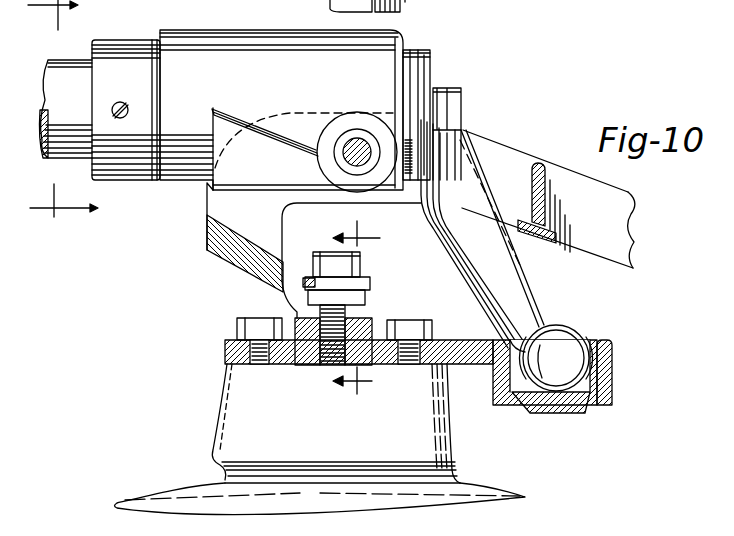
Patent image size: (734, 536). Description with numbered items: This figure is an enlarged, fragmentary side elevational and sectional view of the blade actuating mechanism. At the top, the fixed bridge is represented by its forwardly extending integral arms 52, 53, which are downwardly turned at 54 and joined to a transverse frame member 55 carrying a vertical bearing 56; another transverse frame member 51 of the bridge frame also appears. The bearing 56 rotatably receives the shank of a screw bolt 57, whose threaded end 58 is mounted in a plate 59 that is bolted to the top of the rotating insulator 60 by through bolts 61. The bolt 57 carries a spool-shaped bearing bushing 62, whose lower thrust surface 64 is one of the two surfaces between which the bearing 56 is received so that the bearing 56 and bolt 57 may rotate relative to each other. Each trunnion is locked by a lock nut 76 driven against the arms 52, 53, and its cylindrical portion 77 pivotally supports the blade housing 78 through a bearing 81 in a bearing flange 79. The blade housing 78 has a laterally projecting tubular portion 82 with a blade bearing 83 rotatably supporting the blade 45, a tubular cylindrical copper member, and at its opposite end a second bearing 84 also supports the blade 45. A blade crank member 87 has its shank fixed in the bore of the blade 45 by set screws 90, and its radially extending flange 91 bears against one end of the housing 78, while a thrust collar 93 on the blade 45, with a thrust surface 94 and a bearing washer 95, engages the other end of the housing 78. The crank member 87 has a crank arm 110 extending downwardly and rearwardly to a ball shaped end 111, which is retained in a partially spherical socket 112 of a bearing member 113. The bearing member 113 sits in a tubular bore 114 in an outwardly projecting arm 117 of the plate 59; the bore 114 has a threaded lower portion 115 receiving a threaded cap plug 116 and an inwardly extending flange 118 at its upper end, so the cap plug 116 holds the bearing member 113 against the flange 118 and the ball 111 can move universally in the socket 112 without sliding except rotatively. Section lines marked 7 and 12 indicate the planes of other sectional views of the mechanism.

The section line 7- 7 is at (356, 313).
The section line 12- 12 is at (63, 118).
The blade 45 is at (75, 62).
The transverse frame member 51 is at (546, 193).
The forwardly extending integral arm 52 is at (548, 196).
The forwardly extending integral arm 53 is at (433, 3).
The downwardly turned portion 54 is at (211, 199).
The transverse frame member 55 is at (237, 262).
The vertical bearing 56 is at (368, 281).
The screw bolt 57 is at (361, 260).
The threaded end 58 is at (356, 302).
The plate 59 is at (298, 318).
The rotating insulator 60 is at (451, 436).
The through bolts 61 is at (408, 333).
The bearing bushing 62 is at (309, 277).
The lower thrust surface 64 is at (372, 310).
The lock nut 76 is at (392, 7).
The cylindrical portion 77 is at (342, 150).
The blade housing 78 is at (304, 109).
The bearing flange 79 is at (232, 190).
The bearing 81 is at (360, 130).
The blade supporting tubular portion 82 is at (268, 33).
The blade bearing 83 is at (111, 182).
The second bearing 84 is at (399, 77).
The blade crank member 87 is at (463, 97).
The set screw 90 is at (118, 101).
The radially extending flange 91 is at (431, 78).
The thrust collar 93 is at (152, 107).
The thrust surface 94 is at (152, 120).
The bearing washer 95 is at (157, 134).
The crank arm 110 is at (472, 267).
The ball shaped end 111 is at (563, 331).
The socket 112 is at (590, 340).
The bearing member 113 is at (612, 350).
The tubular bore 114 is at (575, 373).
The threaded lower portion 115 is at (591, 406).
The threaded cap plug 116 is at (555, 406).
The outwardly projecting arm 117 is at (359, 325).
The inwardly extending flange 118 is at (518, 346).